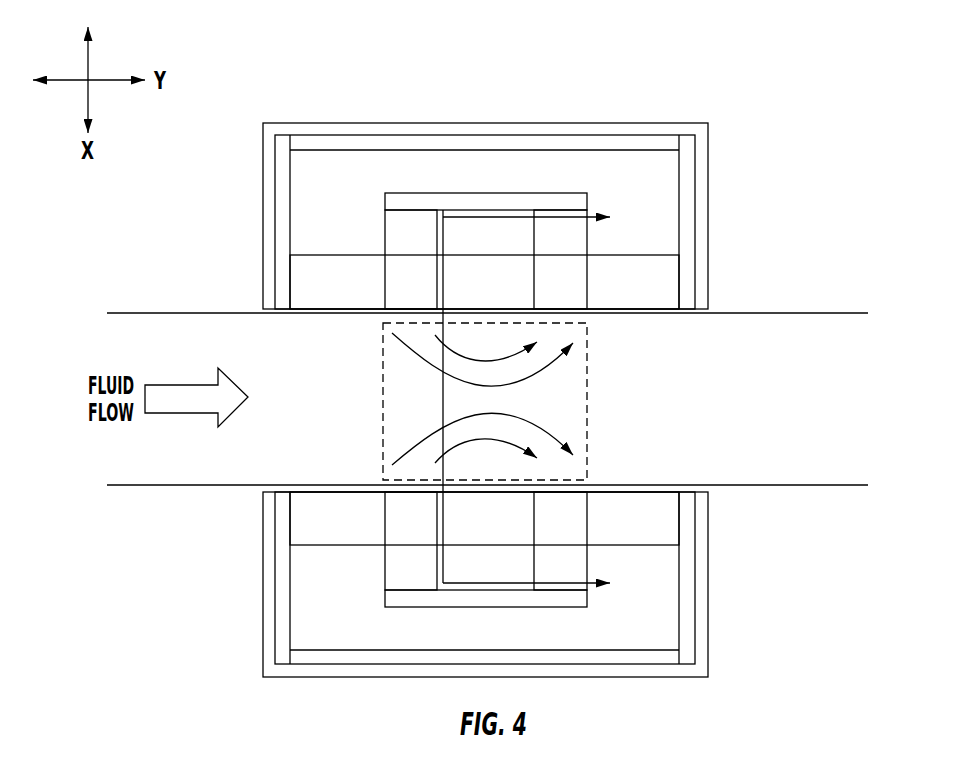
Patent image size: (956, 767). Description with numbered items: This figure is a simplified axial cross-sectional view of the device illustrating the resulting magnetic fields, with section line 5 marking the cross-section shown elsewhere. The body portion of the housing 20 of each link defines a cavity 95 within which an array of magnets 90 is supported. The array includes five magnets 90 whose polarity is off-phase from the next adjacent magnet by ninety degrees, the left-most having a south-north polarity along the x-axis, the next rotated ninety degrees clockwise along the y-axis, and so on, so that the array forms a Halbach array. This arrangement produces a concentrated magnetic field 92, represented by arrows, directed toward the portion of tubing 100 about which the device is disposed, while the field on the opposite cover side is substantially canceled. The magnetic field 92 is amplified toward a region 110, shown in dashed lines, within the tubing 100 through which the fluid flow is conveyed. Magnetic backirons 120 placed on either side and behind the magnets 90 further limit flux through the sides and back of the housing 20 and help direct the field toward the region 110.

The housing 20 is at (312, 123).
The cavity 95 is at (307, 193).
The magnets 90 is at (310, 255).
The magnetic field 92 is at (383, 368).
The portion of tubing 100 is at (788, 303).
The region 110 is at (383, 426).
The magnetic backirons 120 is at (455, 202).
The section line 5- 5 is at (534, 400).